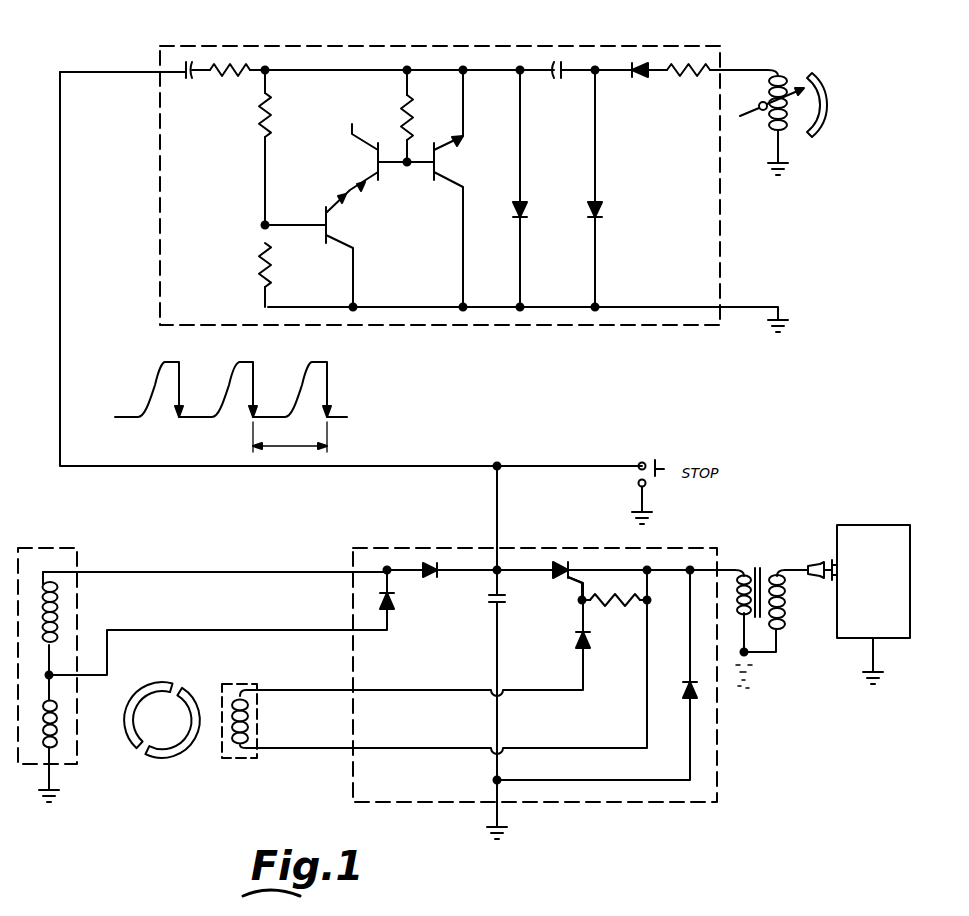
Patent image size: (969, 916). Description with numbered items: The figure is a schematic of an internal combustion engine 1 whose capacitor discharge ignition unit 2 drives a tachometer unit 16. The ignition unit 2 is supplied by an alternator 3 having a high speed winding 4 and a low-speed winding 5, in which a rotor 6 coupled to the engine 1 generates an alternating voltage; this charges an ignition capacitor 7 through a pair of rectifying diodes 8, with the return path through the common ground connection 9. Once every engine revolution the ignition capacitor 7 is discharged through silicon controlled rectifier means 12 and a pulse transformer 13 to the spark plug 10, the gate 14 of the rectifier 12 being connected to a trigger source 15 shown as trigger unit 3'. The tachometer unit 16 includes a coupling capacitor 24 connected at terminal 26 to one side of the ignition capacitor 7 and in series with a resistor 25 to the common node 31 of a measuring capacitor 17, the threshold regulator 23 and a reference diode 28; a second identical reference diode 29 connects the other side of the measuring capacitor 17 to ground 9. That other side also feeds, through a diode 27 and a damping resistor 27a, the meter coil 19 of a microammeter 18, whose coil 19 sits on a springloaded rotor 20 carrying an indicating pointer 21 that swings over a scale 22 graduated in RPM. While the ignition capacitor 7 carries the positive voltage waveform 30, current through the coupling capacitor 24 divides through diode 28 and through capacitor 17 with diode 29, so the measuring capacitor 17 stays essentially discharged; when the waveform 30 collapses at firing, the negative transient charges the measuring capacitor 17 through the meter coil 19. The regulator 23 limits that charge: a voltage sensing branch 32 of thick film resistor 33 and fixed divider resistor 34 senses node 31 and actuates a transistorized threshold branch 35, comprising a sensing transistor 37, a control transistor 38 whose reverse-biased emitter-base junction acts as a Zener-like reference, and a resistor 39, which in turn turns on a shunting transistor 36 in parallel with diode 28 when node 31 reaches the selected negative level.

The internal combustion engine 1 is at (872, 525).
The capacitor discharge ignition unit 2 is at (718, 803).
The alternator 3 is at (64, 666).
The trigger unit 3' is at (262, 722).
The high speed winding 4 is at (58, 733).
The low-speed winding 5 is at (58, 620).
The rotor 6 is at (168, 757).
The ignition capacitor 7 is at (486, 600).
The rectifying diodes 8 is at (394, 600).
The common ground connection 9 is at (786, 178).
The spark plug 10 is at (813, 563).
The silicon controlled rectifier 12 is at (560, 563).
The pulse transformer 13 is at (756, 564).
The gate 14 is at (570, 590).
The trigger source 15 is at (230, 696).
The tachometer unit 16 is at (703, 44).
The measuring capacitor 17 is at (556, 82).
The microammeter 18 is at (792, 72).
The meter coil 19 is at (790, 135).
The springloaded rotor 20 is at (760, 101).
The indicating pointer 21 is at (770, 123).
The scale 22 is at (824, 128).
The threshold regulator 23 is at (378, 188).
The coupling capacitor 24 is at (188, 82).
The resistor 25 is at (222, 80).
The terminal 26 is at (512, 451).
The diode 27 is at (636, 82).
The damping resistor 27a is at (688, 78).
The reference diode 28 is at (526, 208).
The reference diode 29 is at (602, 208).
The positive voltage waveform 30 is at (330, 395).
The common node 31 is at (516, 76).
The voltage sensing branch 32 is at (264, 184).
The thick film resistor 33 is at (270, 116).
The fixed divider resistor 34 is at (272, 270).
The transistorized threshold branch 35 is at (407, 168).
The shunting transistor 36 is at (445, 162).
The sensing transistor 37 is at (335, 204).
The control transistor 38 is at (372, 159).
The resistor 39 is at (400, 112).